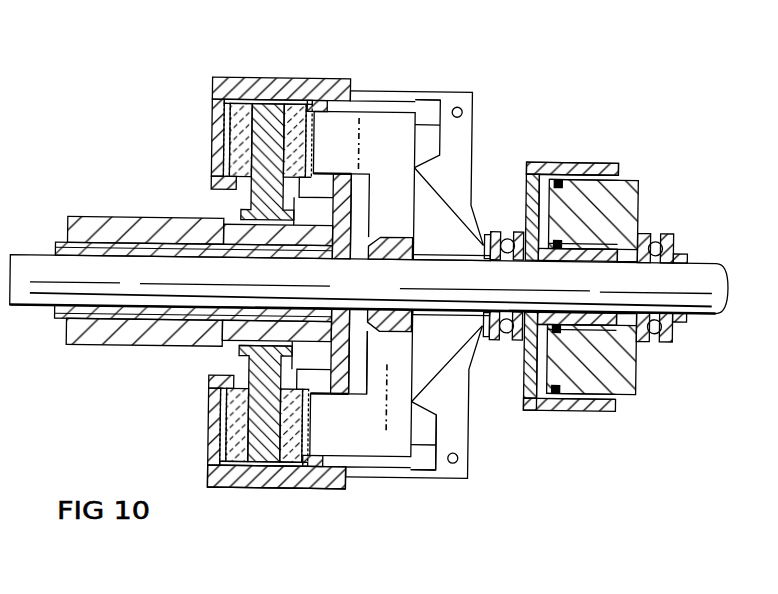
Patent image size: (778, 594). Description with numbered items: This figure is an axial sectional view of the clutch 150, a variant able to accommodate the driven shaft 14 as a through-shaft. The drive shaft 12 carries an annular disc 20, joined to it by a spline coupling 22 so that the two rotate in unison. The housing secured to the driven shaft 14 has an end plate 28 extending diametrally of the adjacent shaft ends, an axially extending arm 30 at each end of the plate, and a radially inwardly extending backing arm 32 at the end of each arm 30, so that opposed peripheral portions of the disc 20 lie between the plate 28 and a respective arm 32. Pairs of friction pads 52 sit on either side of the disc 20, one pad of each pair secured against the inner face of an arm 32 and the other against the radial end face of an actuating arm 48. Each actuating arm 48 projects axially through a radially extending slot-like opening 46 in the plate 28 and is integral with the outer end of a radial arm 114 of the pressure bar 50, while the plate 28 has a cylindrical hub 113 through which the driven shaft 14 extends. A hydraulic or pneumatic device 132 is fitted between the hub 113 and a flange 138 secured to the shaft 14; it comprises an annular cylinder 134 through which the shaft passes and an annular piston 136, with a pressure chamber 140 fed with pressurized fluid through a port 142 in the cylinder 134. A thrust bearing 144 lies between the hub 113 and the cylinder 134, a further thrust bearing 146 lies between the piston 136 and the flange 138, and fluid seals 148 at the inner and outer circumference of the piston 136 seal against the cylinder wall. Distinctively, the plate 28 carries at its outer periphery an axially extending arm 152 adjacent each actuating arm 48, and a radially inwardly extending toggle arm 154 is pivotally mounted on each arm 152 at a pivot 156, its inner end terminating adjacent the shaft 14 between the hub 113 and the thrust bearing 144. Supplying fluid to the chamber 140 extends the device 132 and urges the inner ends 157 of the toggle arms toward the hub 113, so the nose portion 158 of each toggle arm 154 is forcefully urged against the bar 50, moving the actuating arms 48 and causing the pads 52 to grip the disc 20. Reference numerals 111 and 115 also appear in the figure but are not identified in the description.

The drive shaft 12 is at (95, 228).
The driven shaft 14 is at (33, 270).
The annular disc 20 is at (262, 88).
The spline coupling 22 is at (232, 223).
The end plate 28 is at (280, 368).
The axially extending arm 30 is at (267, 118).
The backing arm 32 is at (213, 150).
The opening 46 is at (332, 487).
The actuating arm 48 is at (322, 132).
The pressure bar 50 is at (396, 355).
The friction pads 52 is at (284, 100).
The bushing 111 is at (59, 314).
The cylindrical hub 113 is at (421, 254).
The radial arm 114 is at (387, 198).
The ring 115 is at (386, 262).
The hydraulic or pneumatic device 132 is at (608, 160).
The annular cylinder 134 is at (590, 408).
The annular piston 136 is at (618, 198).
The flange 138 is at (685, 322).
The pressure chamber 140 is at (525, 210).
The port 142 is at (537, 408).
The thrust bearing 144 is at (496, 230).
The further thrust bearing 146 is at (653, 350).
The fluid seals 148 is at (562, 388).
The clutch 150 is at (140, 411).
The axially extending arm 152 is at (440, 503).
The toggle arm 154 is at (455, 430).
The pivot 156 is at (463, 462).
The inner ends 157 is at (483, 245).
The nose portion 158 is at (413, 166).